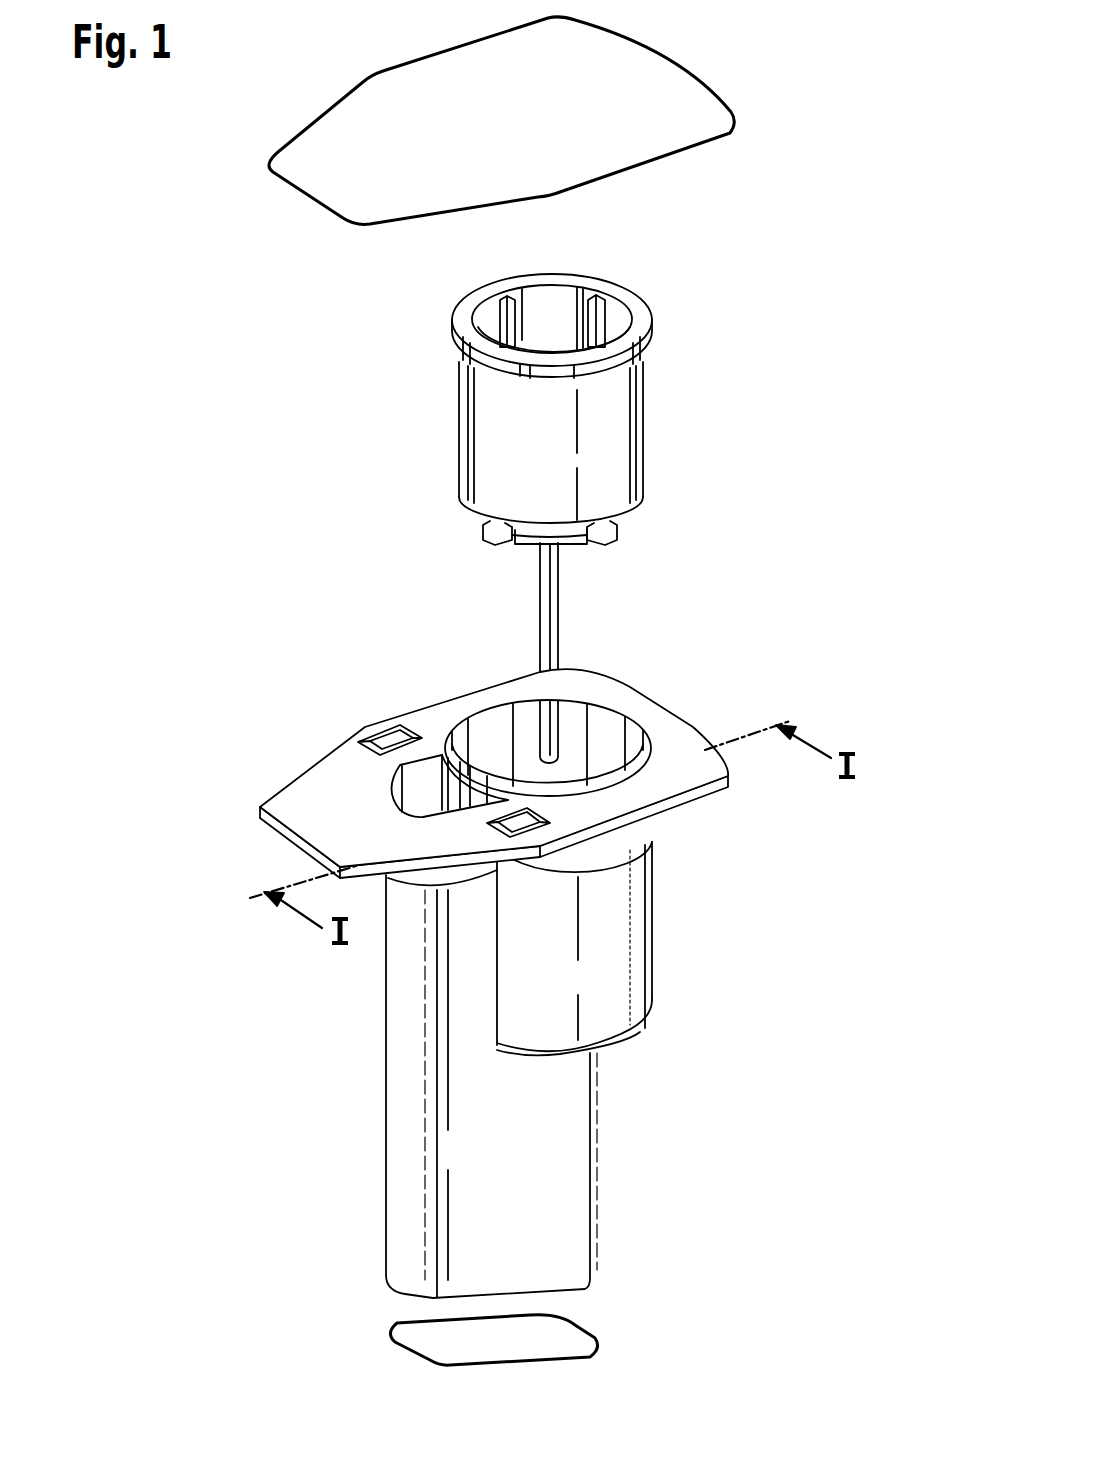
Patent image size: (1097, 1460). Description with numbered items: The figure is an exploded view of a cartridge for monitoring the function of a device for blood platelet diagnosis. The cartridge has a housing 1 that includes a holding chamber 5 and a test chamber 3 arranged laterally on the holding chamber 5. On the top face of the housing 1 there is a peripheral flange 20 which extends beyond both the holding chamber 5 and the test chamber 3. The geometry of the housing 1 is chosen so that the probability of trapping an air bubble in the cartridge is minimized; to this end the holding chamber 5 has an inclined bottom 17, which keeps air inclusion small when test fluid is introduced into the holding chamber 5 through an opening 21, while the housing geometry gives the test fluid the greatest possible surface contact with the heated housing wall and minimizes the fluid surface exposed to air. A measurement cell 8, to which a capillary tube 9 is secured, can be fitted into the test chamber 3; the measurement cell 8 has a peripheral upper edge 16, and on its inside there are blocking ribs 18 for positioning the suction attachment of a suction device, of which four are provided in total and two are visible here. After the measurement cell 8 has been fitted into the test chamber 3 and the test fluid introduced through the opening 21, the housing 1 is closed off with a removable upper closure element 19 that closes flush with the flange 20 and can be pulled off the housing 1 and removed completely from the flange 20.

The housing 1 is at (499, 983).
The test chamber 3 is at (618, 987).
The holding chamber 5 is at (402, 1177).
The measurement cell 8 is at (552, 409).
The capillary tube 9 is at (548, 643).
The peripheral upper edge 16 is at (630, 337).
The inclined bottom 17 is at (562, 1340).
The blocking ribs 18 is at (510, 318).
The upper closure element 19 is at (658, 90).
The peripheral flange 20 is at (499, 807).
The opening 21 is at (407, 787).